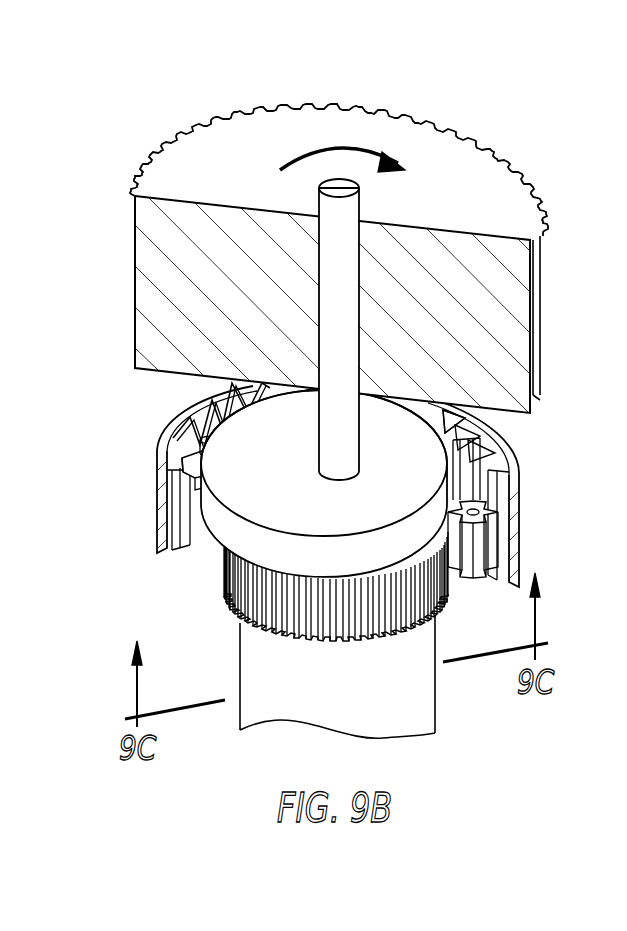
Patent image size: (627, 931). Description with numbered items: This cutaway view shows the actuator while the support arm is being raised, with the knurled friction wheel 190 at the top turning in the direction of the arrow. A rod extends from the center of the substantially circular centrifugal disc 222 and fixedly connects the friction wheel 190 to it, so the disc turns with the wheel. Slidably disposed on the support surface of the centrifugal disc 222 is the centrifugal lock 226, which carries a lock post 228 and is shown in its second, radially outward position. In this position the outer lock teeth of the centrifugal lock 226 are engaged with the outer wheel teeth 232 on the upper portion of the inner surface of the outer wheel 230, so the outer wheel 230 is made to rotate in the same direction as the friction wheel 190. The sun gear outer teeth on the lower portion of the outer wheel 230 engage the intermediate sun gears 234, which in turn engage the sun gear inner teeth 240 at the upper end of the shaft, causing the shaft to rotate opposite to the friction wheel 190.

The friction wheel 190 is at (481, 130).
The centrifugal disc 222 is at (393, 480).
The centrifugal lock 226 is at (247, 452).
The lock post 228 is at (200, 415).
The outer wheel 230 is at (155, 522).
The outer wheel teeth 232 is at (470, 440).
The intermediate sun gears 234 is at (463, 587).
The sun gear inner teeth 240 is at (282, 640).